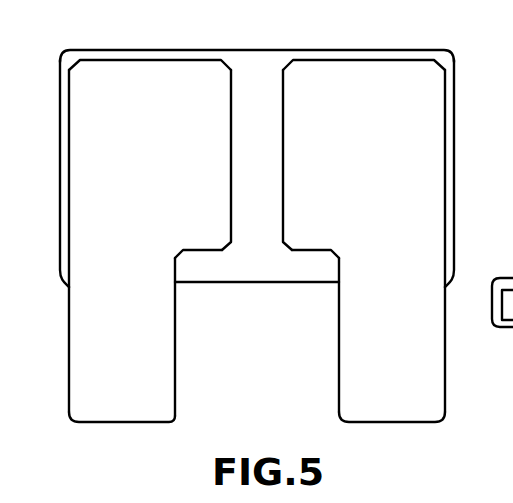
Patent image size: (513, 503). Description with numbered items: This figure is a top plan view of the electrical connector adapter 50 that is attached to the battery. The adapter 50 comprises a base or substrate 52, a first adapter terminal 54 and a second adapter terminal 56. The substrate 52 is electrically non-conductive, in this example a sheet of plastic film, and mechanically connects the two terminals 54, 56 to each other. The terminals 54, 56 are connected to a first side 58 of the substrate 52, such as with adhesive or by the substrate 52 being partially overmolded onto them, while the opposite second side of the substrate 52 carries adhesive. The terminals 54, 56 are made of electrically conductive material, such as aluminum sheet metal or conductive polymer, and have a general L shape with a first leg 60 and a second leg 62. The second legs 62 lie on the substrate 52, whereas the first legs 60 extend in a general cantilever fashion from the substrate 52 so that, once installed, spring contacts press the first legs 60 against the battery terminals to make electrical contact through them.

The electrical connector adapter 50 is at (263, 50).
The substrate 52 is at (415, 50).
The first adapter terminal 54 is at (70, 378).
The second adapter terminal 56 is at (375, 424).
The first side of the substrate 58 is at (250, 77).
The first leg 60 is at (97, 407).
The second leg 62 is at (88, 162).